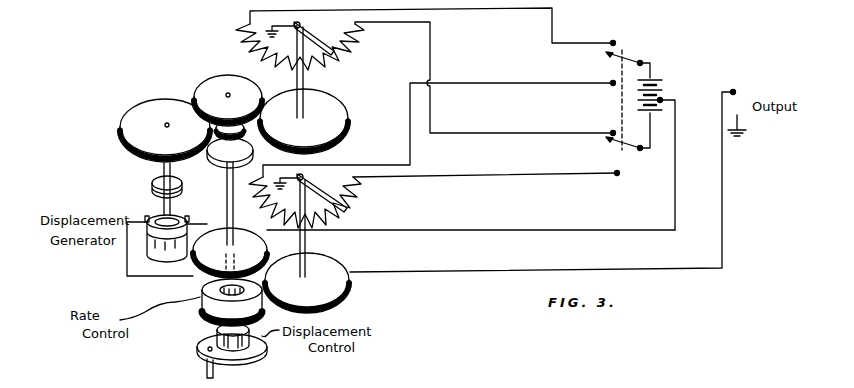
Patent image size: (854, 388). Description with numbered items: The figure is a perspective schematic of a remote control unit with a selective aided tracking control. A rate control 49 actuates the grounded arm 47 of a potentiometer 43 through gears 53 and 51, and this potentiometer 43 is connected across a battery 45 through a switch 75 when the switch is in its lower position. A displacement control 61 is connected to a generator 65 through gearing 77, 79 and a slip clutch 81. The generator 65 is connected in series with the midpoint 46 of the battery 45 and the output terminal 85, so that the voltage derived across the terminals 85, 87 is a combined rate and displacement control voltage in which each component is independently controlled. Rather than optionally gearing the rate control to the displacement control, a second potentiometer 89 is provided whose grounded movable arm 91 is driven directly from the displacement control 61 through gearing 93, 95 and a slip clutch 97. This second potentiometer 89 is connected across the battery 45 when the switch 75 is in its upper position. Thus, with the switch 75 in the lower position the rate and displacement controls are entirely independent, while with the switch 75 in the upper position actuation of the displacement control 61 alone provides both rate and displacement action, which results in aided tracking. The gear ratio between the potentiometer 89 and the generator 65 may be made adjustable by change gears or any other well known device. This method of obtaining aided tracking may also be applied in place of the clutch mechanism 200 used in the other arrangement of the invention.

The gearing 95 is at (220, 76).
The slip clutch 97 is at (207, 131).
The gearing 93 is at (350, 104).
The grounded movable arm 91 is at (303, 24).
The second potentiometer 89 is at (346, 56).
The grounded arm 47 is at (308, 177).
The potentiometer 43 is at (350, 200).
The gear 53 is at (349, 300).
The gearing 77 is at (226, 180).
The gear 51 is at (195, 280).
The rate control 49 is at (202, 310).
The clutch mechanism 200 is at (203, 339).
The displacement control 61 is at (263, 351).
The gearing 79 is at (142, 165).
The slip clutch 81 is at (152, 194).
The generator 65 is at (127, 266).
The switch 75 is at (627, 62).
The battery 45 is at (660, 79).
The midpoint 46 is at (663, 100).
The output terminal 85 is at (736, 91).
The terminal 87 is at (740, 118).